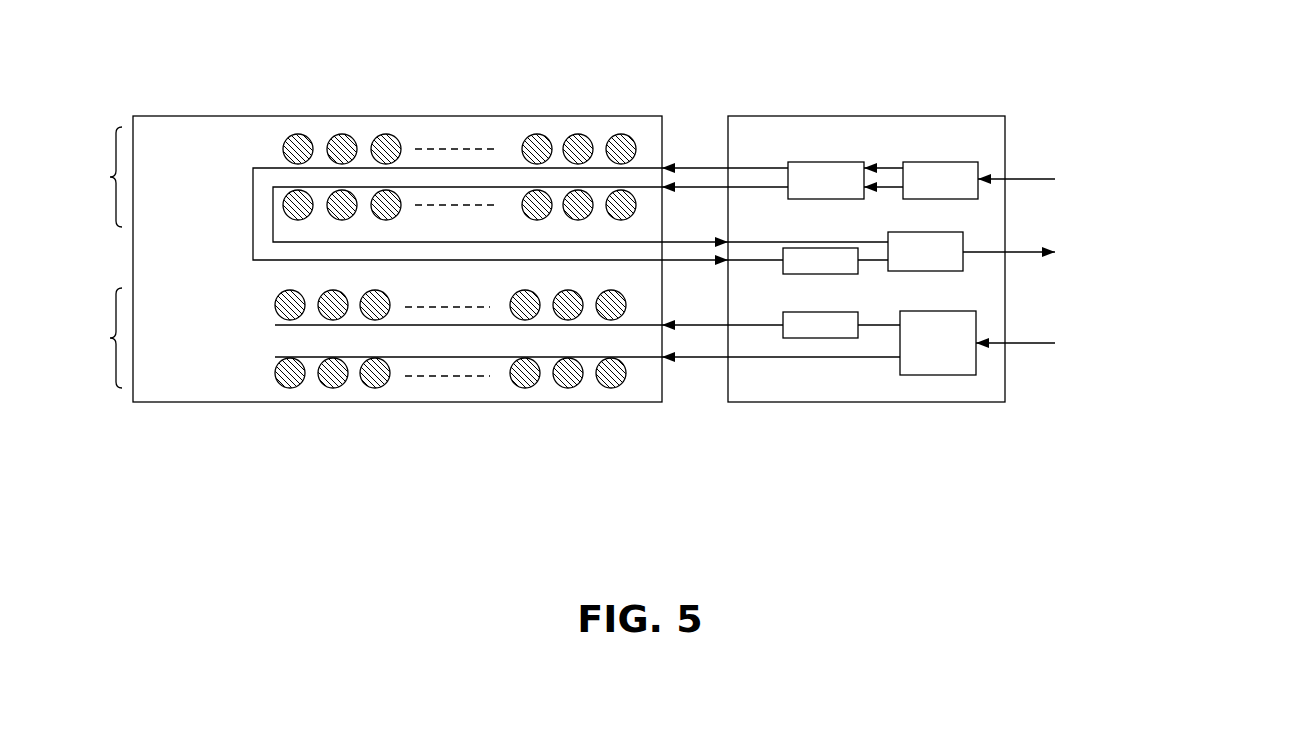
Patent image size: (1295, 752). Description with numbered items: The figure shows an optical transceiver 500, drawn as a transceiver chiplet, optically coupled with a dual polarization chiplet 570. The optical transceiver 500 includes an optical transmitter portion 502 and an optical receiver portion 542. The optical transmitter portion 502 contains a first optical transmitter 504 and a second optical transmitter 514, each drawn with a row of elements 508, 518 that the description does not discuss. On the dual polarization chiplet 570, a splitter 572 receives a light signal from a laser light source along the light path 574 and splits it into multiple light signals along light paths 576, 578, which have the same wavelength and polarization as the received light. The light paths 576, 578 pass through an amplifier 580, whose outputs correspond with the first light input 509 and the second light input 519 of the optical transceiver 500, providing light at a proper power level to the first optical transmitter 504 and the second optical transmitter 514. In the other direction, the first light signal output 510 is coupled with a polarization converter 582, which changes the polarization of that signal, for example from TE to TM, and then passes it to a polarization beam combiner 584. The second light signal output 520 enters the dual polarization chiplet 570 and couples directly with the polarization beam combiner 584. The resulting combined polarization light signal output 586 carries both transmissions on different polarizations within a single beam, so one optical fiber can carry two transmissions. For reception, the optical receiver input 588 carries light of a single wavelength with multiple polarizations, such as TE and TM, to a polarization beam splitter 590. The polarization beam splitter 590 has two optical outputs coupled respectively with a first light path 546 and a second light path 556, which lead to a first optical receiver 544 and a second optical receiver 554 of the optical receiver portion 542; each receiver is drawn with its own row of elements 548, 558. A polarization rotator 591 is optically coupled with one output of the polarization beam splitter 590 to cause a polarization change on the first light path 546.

The optical transceiver 500 is at (622, 45).
The optical transmitter portion 502 is at (92, 177).
The first optical transmitter 504 is at (187, 145).
The second optical transmitter 514 is at (180, 202).
The first transmitter modulator elements 508 is at (535, 134).
The second transmitter modulator elements 518 is at (545, 200).
The first light input 509 is at (670, 165).
The second light input 519 is at (668, 192).
The second light signal output 520 is at (676, 246).
The first light signal output 510 is at (683, 262).
The optical receiver portion 542 is at (92, 338).
The first optical receiver 544 is at (185, 310).
The second optical receiver 554 is at (185, 360).
The first light path 546 is at (408, 326).
The second light path 556 is at (448, 358).
The first receiver photodetector elements 548 is at (518, 316).
The second receiver photodetector elements 558 is at (535, 385).
The dual polarization chiplet 570 is at (975, 35).
The splitter 572 is at (962, 162).
The light path 574 is at (1050, 181).
The light path 576 is at (882, 165).
The light path 578 is at (892, 185).
The amplifier 580 is at (822, 162).
The polarization converter 582 is at (786, 274).
The polarization beam combiner 584 is at (945, 271).
The combined polarization light signal output 586 is at (1030, 253).
The optical receiver input 588 is at (1045, 344).
The polarization beam splitter 590 is at (955, 375).
The polarization rotator 591 is at (858, 336).